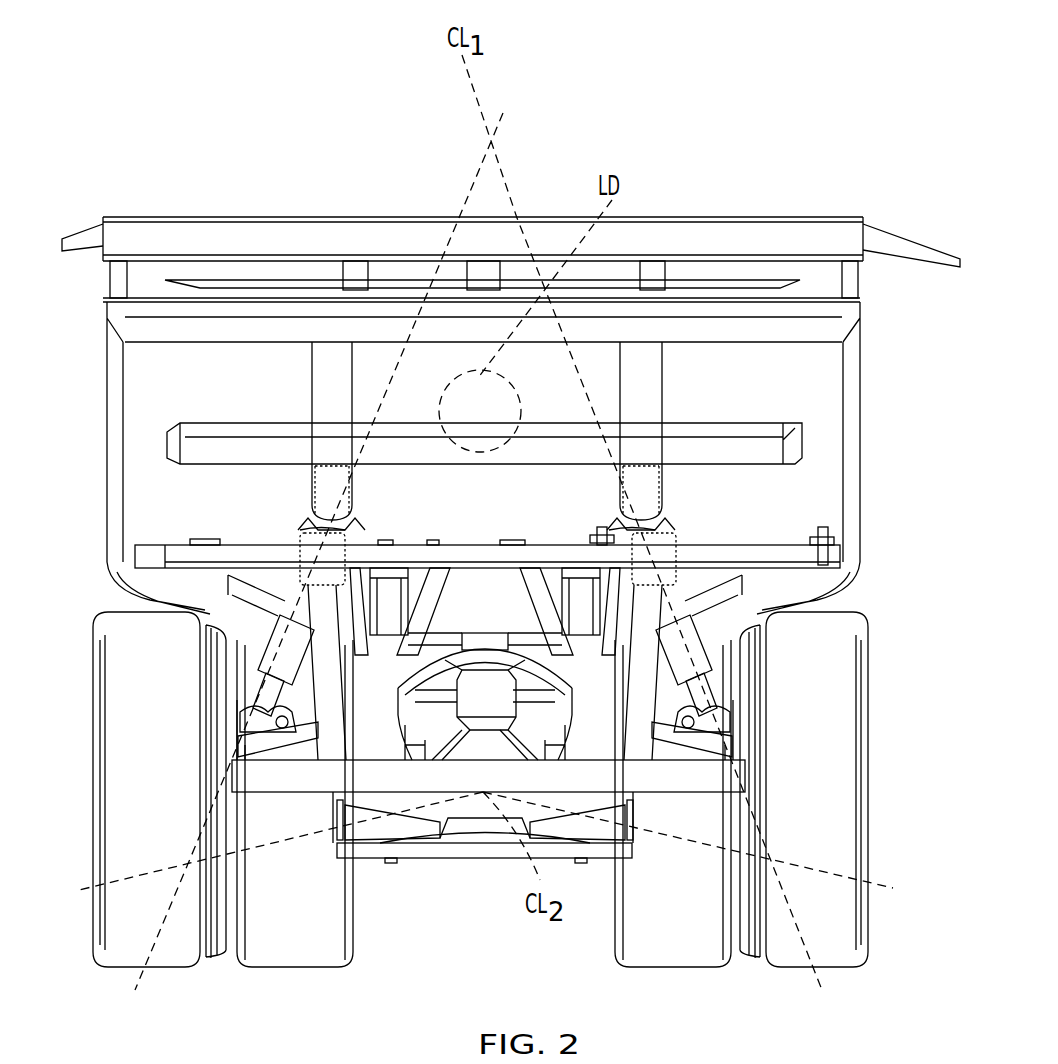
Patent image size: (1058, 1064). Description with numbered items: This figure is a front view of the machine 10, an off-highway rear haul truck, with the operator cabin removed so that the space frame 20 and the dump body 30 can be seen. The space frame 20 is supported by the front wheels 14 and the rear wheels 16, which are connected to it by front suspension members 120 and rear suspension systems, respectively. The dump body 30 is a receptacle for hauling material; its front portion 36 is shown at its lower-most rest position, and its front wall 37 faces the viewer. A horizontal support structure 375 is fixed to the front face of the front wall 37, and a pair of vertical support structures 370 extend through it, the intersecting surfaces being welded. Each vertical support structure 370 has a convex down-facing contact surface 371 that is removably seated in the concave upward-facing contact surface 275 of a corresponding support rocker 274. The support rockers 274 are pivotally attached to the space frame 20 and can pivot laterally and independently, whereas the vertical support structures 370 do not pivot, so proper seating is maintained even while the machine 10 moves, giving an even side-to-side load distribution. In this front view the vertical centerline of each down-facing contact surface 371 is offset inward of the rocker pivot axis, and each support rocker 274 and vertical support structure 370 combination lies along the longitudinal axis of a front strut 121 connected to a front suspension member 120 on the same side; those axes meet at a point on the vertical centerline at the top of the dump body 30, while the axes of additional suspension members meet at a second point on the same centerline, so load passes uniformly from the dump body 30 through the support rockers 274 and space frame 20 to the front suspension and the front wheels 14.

The machine 10 is at (150, 156).
The dump body 30 is at (888, 186).
The front portion 36 is at (888, 275).
The front wall 37 is at (125, 402).
The horizontal support structure 375 is at (250, 440).
The vertical support structure 370 is at (660, 487).
The down-facing contact surface 371 is at (340, 530).
The upward-facing contact surface 275 is at (305, 540).
The support rocker 274 is at (680, 538).
The front strut 121 is at (265, 657).
The front suspension member 120 is at (235, 745).
The front wheel 14 is at (125, 826).
The rear wheel 16 is at (300, 940).
The space frame 20 is at (455, 890).